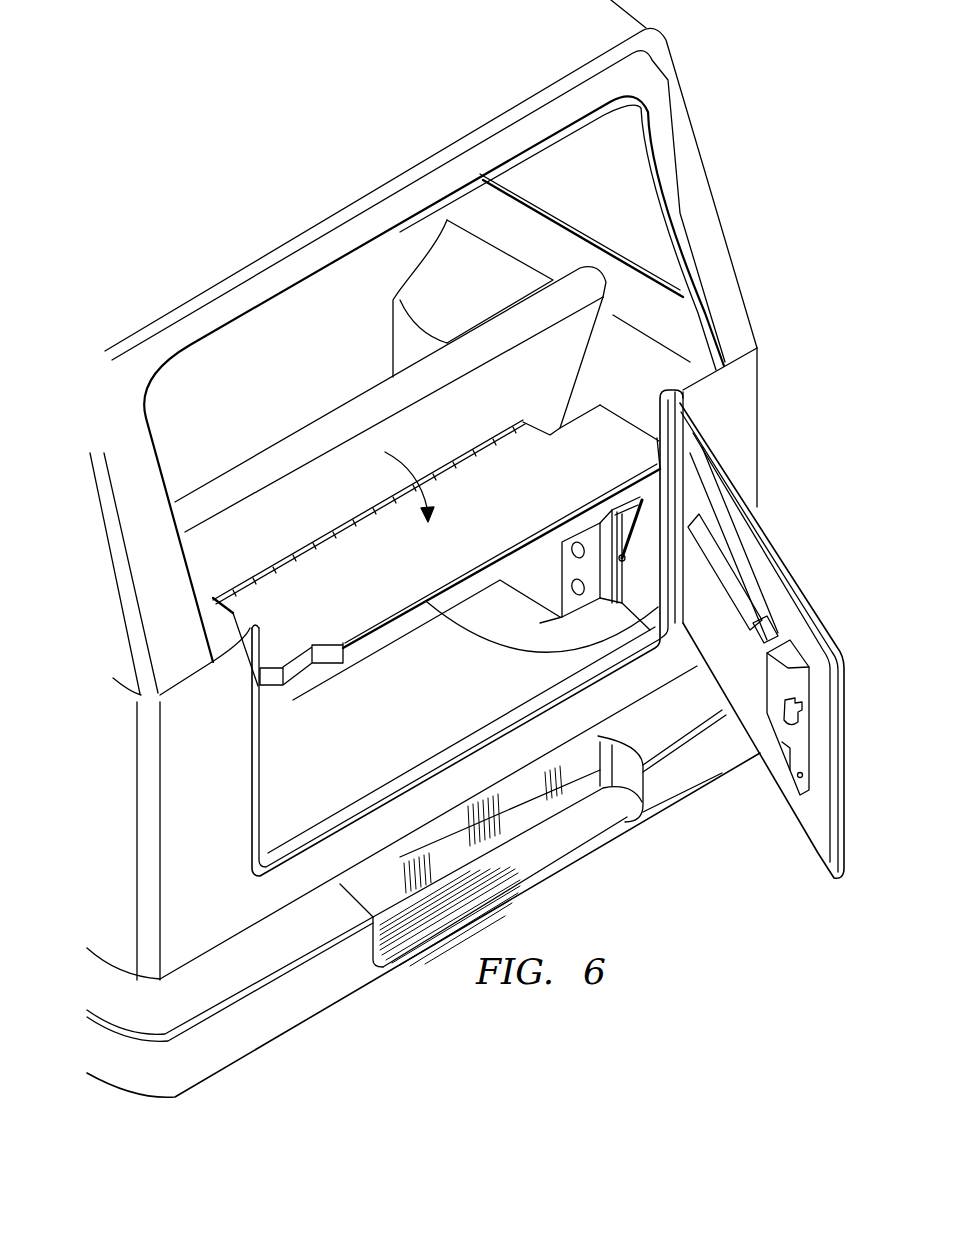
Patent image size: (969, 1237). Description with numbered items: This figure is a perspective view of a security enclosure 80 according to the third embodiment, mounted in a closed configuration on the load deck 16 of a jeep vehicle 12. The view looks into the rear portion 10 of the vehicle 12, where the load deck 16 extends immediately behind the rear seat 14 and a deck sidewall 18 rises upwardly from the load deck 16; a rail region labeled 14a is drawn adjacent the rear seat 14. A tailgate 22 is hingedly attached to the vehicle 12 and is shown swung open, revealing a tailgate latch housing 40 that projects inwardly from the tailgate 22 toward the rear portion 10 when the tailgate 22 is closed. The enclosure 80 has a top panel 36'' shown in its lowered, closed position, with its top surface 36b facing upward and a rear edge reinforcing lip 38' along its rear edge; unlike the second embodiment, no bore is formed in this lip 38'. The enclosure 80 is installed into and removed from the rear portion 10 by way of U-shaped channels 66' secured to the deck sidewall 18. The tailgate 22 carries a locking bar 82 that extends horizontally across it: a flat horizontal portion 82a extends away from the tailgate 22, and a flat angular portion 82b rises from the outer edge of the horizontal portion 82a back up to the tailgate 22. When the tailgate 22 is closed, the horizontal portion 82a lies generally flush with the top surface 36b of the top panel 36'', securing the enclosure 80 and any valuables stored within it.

The rear portion of the vehicle 10 is at (768, 124).
The vehicle 12 is at (692, 66).
The rear seat 14 is at (215, 483).
The rail lower flange 14a is at (255, 500).
The load deck 16 is at (464, 689).
The deck sidewall 18 is at (655, 603).
The tailgate 22 is at (809, 603).
The top panel 36'' is at (531, 327).
The top surface of the top panel 36b is at (499, 518).
The rear edge reinforcing lip 38' is at (501, 558).
The tailgate latch housing 40 is at (772, 718).
The U-shaped channel 66' is at (595, 573).
The security enclosure 80 is at (333, 683).
The locking bar 82 is at (729, 556).
The flat horizontal portion 82a is at (758, 646).
The flat angular portion 82b is at (741, 600).